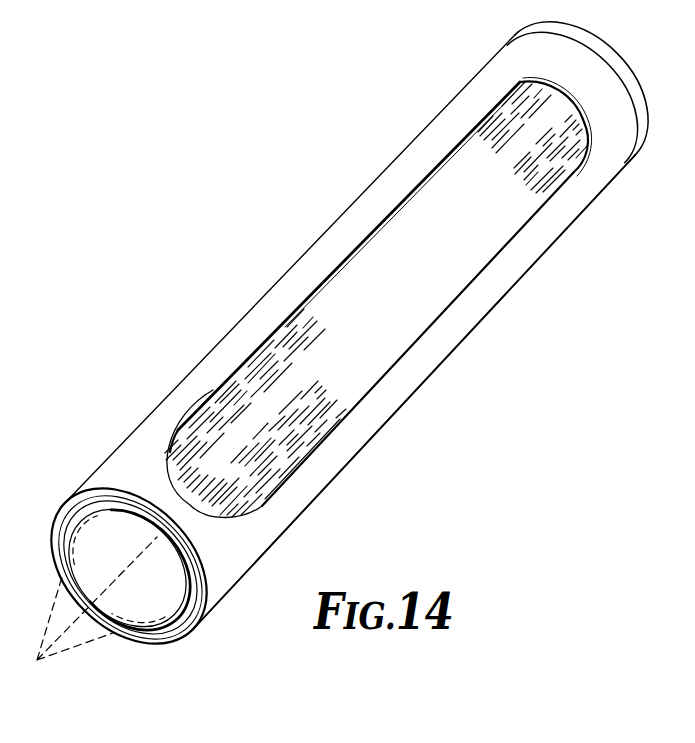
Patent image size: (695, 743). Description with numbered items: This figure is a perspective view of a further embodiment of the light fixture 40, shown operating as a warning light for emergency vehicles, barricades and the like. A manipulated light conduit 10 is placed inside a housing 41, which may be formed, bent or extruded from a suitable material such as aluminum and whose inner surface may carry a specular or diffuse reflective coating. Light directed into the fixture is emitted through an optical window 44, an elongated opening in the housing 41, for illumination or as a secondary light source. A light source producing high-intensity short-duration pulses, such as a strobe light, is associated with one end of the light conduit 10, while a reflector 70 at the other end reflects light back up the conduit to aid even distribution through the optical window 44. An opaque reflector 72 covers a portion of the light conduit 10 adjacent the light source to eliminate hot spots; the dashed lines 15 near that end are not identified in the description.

The light conduit 10 is at (96, 510).
The line of sight 15 is at (37, 656).
The light fixture 40 is at (320, 236).
The housing 41 is at (383, 180).
The optical window 44 is at (346, 414).
The reflector 70 is at (602, 50).
The opaque reflector 72 is at (176, 633).